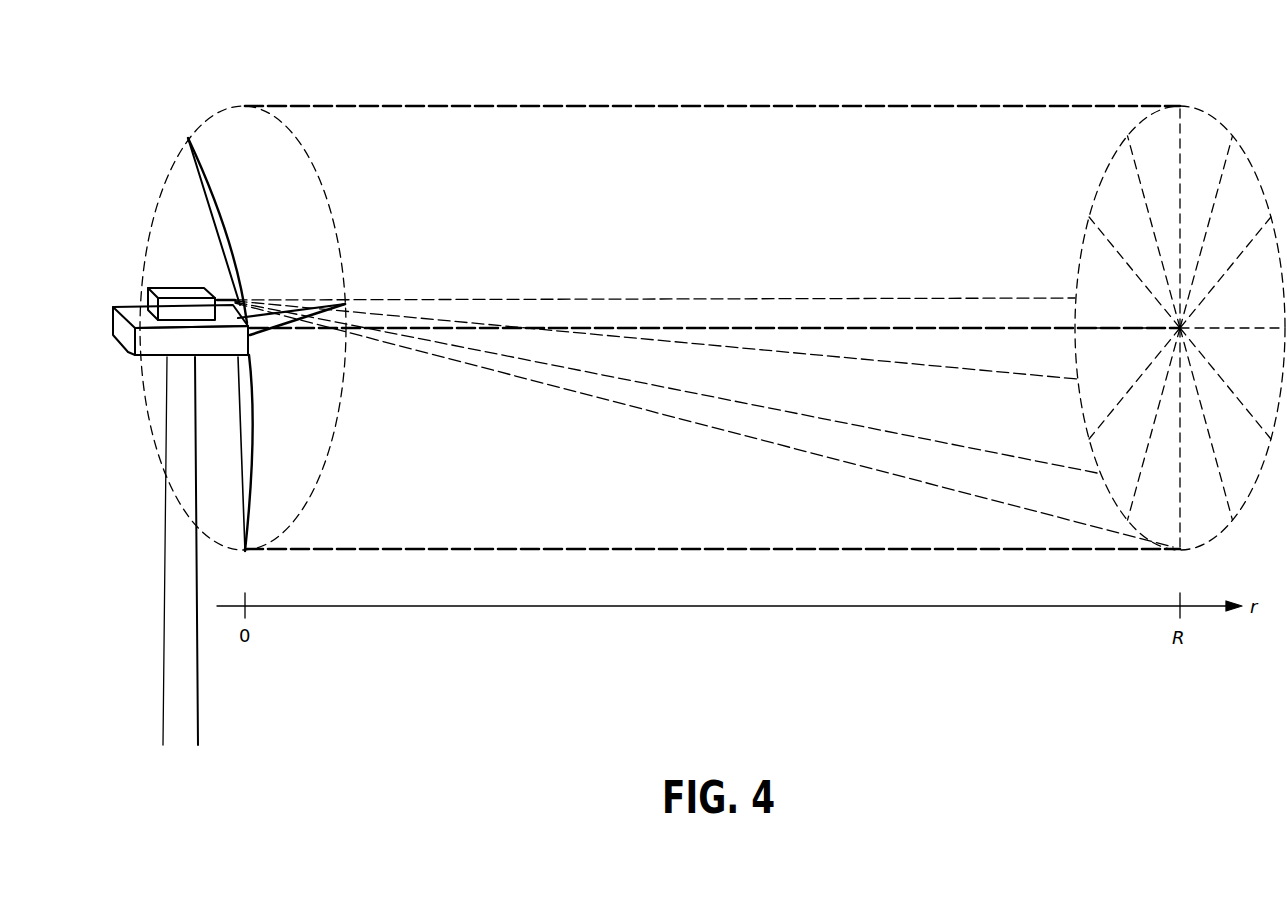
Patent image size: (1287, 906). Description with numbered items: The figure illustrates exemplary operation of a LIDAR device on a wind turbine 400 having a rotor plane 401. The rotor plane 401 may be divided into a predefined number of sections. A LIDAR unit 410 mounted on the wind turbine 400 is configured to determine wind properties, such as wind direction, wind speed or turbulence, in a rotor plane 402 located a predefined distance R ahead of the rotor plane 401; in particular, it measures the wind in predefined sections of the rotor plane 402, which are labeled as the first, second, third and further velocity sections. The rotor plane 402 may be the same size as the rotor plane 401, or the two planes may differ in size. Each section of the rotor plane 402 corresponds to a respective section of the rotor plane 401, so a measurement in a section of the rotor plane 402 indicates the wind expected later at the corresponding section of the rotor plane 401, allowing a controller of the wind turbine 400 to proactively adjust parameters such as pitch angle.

The wind turbine 400 is at (78, 320).
The rotor plane 401 is at (223, 107).
The rotor plane 402 is at (1191, 107).
The LIDAR unit 410 is at (148, 301).